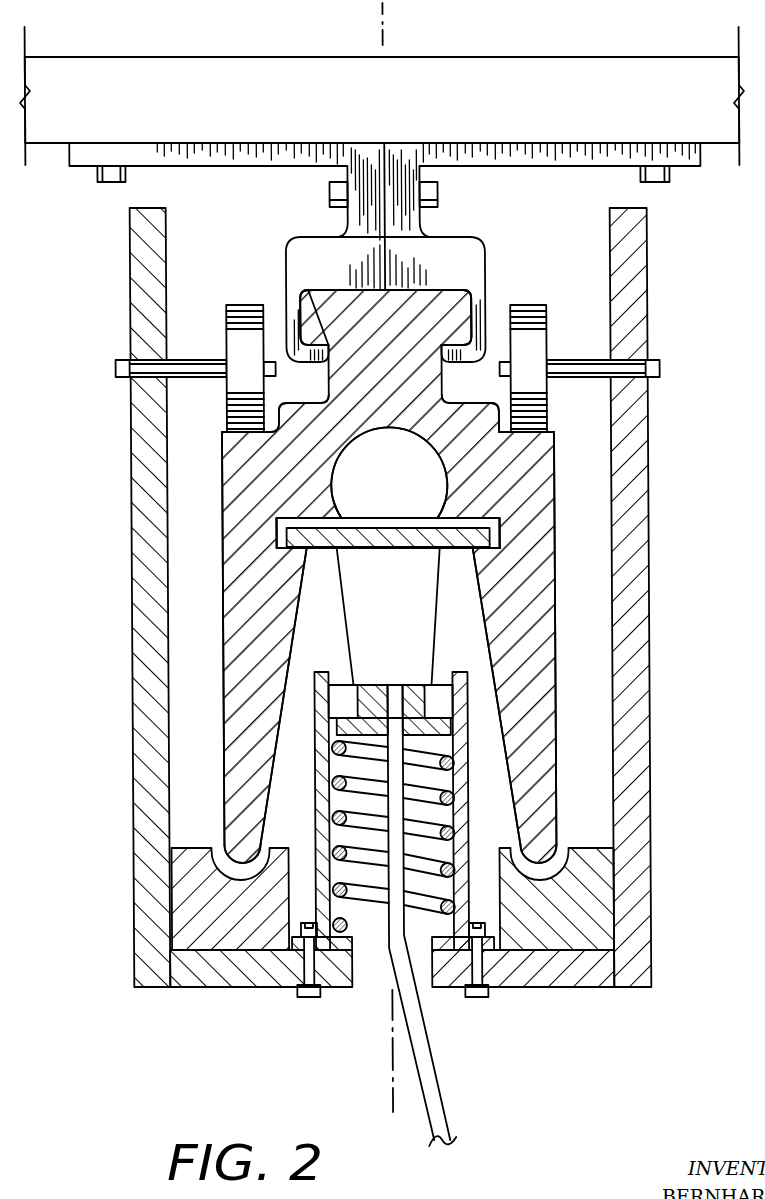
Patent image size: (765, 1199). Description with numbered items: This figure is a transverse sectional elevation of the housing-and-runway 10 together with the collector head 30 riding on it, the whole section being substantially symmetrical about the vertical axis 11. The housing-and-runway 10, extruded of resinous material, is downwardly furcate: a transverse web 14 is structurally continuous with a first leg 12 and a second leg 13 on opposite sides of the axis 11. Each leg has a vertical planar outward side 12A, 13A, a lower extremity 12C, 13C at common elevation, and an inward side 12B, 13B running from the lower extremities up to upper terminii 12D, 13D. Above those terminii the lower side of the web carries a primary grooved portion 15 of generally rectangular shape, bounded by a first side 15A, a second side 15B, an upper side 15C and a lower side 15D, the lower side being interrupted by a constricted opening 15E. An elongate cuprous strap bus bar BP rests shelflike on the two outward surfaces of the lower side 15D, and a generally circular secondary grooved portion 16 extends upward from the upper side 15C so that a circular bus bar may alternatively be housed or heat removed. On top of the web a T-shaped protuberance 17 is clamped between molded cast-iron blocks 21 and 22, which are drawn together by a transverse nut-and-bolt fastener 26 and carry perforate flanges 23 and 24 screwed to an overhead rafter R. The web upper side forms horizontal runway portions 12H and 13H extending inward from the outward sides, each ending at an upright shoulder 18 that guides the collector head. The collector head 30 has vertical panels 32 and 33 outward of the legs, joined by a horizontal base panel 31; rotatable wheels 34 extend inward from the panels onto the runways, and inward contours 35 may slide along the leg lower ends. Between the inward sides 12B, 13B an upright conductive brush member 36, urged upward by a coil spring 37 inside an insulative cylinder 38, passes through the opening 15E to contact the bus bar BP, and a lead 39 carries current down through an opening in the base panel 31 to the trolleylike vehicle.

The rafter R is at (578, 56).
The housing-and-runway 10 is at (384, 574).
The vertical axis 11 is at (387, 46).
The first leg 12 is at (255, 647).
The first leg outward side 12A is at (223, 642).
The first leg inward side 12B is at (288, 664).
The first leg lower extremity 12C is at (252, 848).
The upper terminus of first leg inward side 12D is at (300, 555).
The first runway portion 12H is at (233, 438).
The second leg 13 is at (524, 647).
The second leg outward side 13A is at (555, 642).
The second leg inward side 13B is at (486, 664).
The second leg lower extremity 13C is at (528, 848).
The upper terminus of second leg inward side 13D is at (470, 555).
The second runway portion 13H is at (542, 438).
The transverse web 14 is at (389, 576).
The primary grooved portion 15 is at (390, 520).
The groove first side 15A is at (277, 530).
The groove second side 15B is at (500, 530).
The groove upper side 15C is at (336, 512).
The groove lower side 15D is at (498, 548).
The constricted opening 15E is at (330, 550).
The secondary grooved portion 16 is at (372, 434).
The T-shaped protuberance 17 is at (385, 317).
The upright shoulder 18 is at (287, 403).
The first cast-iron block 21 is at (294, 250).
The second cast-iron block 22 is at (480, 250).
The perforate flange of first block 23 is at (187, 167).
The perforate flange of second block 24 is at (565, 167).
The nut-and-bolt fastener 26 is at (333, 196).
The collector head 30 is at (384, 612).
The horizontal base panel 31 is at (172, 987).
The first vertical panel 32 is at (131, 460).
The second vertical panel 33 is at (648, 460).
The rotatable wheel 34 is at (252, 305).
The inward contour 35 is at (218, 863).
The brush member 36 is at (343, 618).
The coil spring 37 is at (458, 790).
The insulative cylinder 38 is at (314, 797).
The lead 39 is at (433, 1080).
The bus bar BP is at (438, 548).